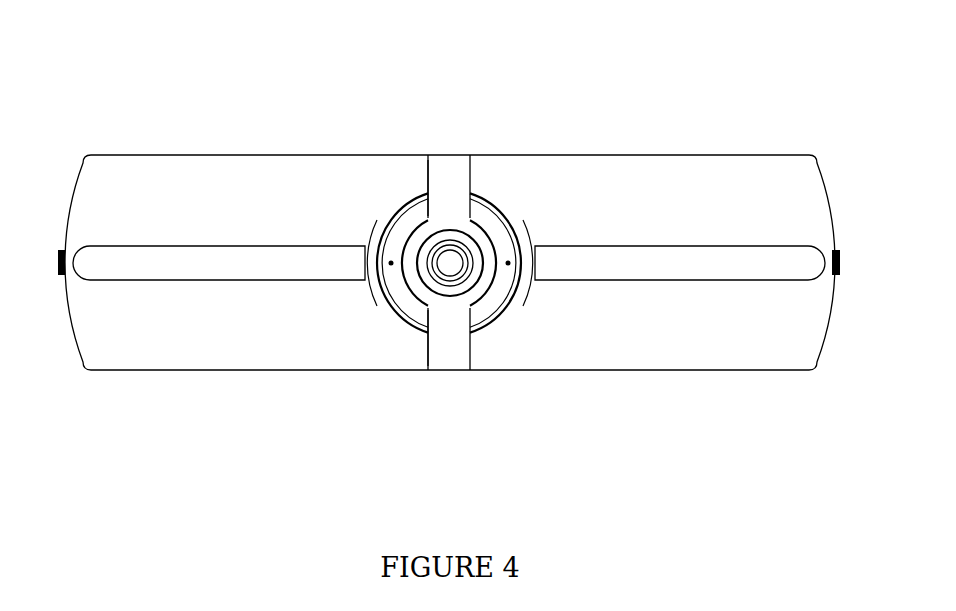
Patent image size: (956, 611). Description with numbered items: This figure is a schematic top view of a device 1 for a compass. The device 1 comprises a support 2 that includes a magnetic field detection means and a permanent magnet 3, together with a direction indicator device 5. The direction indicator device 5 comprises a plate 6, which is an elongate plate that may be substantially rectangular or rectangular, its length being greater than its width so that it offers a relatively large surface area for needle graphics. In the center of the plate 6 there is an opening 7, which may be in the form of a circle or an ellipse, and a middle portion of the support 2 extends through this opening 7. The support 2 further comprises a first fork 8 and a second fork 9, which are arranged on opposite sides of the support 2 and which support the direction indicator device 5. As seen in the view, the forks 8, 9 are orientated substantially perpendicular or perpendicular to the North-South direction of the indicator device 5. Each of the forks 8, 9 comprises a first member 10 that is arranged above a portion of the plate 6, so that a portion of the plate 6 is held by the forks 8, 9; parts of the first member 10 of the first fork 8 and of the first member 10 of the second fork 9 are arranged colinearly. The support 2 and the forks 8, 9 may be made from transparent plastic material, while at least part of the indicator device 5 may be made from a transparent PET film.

The device 1 is at (449, 192).
The support 2 is at (386, 220).
The permanent magnet 3 is at (375, 277).
The direction indicator device 5 is at (240, 245).
The plate 6 is at (760, 153).
The opening 7 is at (517, 213).
The first fork 8 is at (450, 370).
The second fork 9 is at (445, 155).
The first member 10 is at (426, 185).